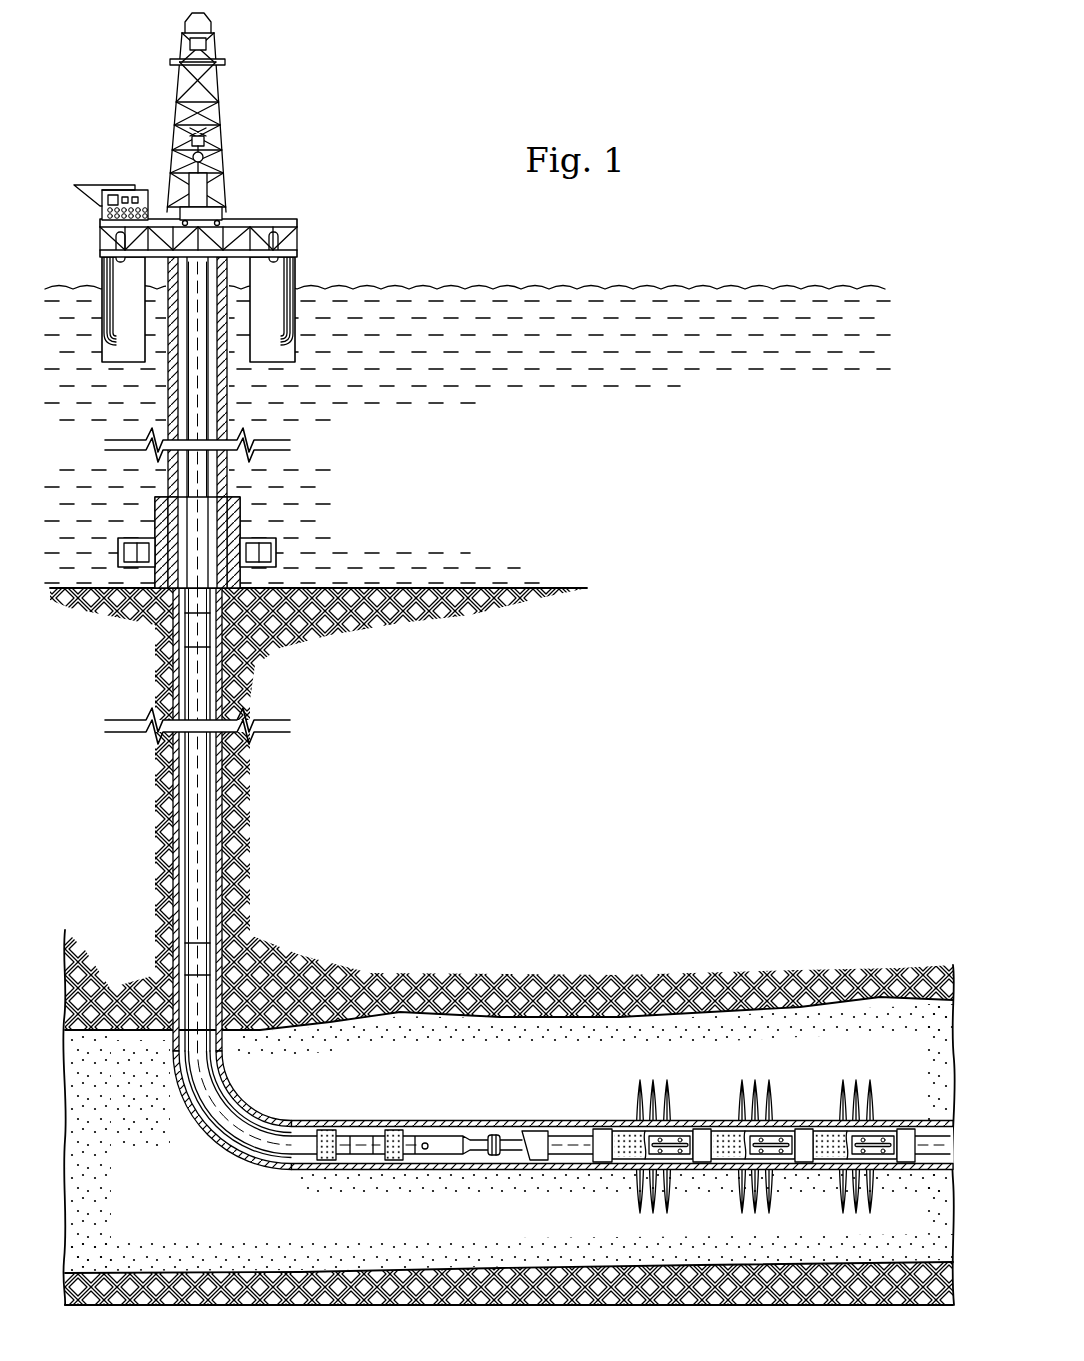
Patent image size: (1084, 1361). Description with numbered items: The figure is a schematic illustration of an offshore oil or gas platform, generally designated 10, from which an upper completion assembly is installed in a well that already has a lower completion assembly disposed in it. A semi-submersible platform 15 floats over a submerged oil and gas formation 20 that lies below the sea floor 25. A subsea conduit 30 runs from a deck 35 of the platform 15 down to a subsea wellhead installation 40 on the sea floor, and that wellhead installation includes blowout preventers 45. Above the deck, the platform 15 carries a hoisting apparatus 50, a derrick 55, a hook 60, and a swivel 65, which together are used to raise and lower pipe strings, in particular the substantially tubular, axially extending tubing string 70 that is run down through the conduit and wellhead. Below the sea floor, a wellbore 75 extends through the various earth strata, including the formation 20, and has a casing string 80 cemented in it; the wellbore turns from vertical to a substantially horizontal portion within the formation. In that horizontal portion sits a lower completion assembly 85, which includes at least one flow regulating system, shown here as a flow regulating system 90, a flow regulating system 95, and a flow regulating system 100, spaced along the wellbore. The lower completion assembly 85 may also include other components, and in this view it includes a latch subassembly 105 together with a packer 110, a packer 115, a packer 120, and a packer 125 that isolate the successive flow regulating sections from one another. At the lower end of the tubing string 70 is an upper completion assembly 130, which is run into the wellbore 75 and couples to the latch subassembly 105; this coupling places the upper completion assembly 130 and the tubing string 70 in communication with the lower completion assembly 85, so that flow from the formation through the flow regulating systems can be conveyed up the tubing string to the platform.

The offshore oil or gas platform 10 is at (292, 113).
The semi-submersible platform 15 is at (290, 222).
The oil and gas formation 20 is at (128, 1181).
The sea floor 25 is at (548, 587).
The subsea conduit 30 is at (228, 403).
The deck 35 is at (300, 256).
The subsea wellhead installation 40 is at (151, 519).
The blowout preventers 45 is at (262, 548).
The hoisting apparatus 50 is at (222, 202).
The derrick 55 is at (187, 45).
The hook 60 is at (190, 140).
The swivel 65 is at (192, 160).
The tubing string 70 is at (190, 600).
The wellbore 75 is at (187, 797).
The casing string 80 is at (230, 790).
The lower completion assembly 85 is at (752, 1053).
The flow regulating system 90 is at (684, 1112).
The flow regulating system 95 is at (787, 1112).
The flow regulating system 100 is at (887, 1112).
The latch subassembly 105 is at (541, 1112).
The packer 110 is at (603, 1168).
The packer 115 is at (702, 1168).
The packer 120 is at (804, 1168).
The packer 125 is at (906, 1168).
The upper completion assembly 130 is at (399, 1112).